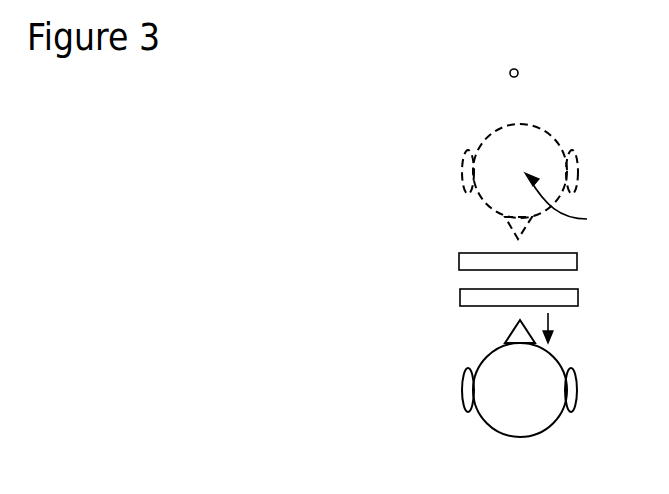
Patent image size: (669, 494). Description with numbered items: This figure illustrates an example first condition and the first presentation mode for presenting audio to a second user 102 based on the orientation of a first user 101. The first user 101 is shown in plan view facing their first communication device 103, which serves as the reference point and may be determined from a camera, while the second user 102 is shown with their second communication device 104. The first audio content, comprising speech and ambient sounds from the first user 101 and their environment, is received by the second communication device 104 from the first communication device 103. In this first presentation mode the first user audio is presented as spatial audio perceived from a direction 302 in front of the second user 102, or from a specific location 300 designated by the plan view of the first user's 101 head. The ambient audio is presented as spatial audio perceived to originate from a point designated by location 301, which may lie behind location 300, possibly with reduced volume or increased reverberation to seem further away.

The first user 101 is at (505, 148).
The second user 102 is at (500, 410).
The first communication device 103 is at (468, 261).
The second communication device 104 is at (465, 294).
The location 300 is at (577, 202).
The location 301 is at (518, 70).
The direction 302 is at (548, 313).